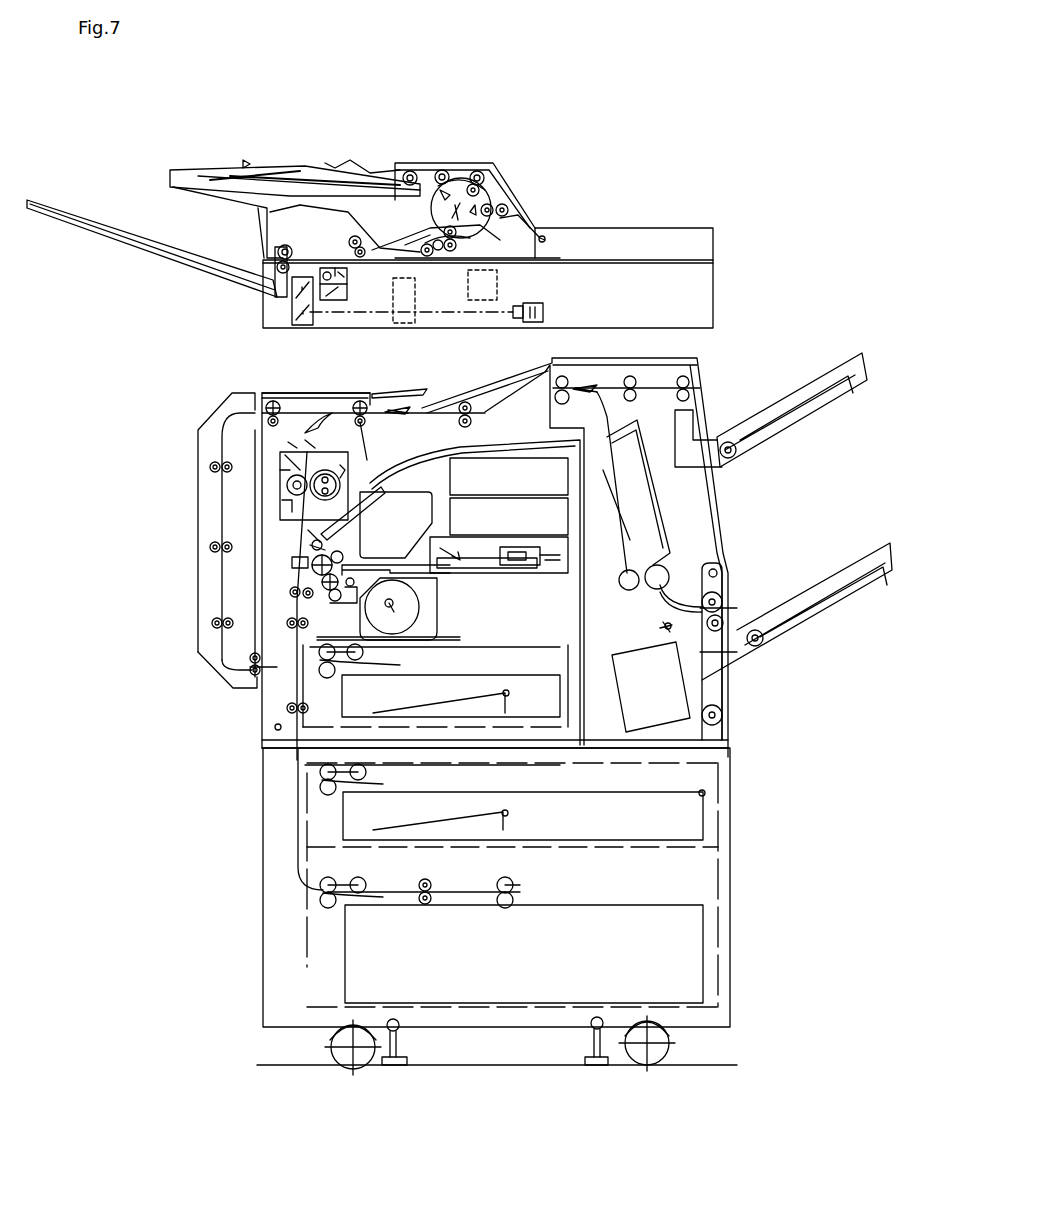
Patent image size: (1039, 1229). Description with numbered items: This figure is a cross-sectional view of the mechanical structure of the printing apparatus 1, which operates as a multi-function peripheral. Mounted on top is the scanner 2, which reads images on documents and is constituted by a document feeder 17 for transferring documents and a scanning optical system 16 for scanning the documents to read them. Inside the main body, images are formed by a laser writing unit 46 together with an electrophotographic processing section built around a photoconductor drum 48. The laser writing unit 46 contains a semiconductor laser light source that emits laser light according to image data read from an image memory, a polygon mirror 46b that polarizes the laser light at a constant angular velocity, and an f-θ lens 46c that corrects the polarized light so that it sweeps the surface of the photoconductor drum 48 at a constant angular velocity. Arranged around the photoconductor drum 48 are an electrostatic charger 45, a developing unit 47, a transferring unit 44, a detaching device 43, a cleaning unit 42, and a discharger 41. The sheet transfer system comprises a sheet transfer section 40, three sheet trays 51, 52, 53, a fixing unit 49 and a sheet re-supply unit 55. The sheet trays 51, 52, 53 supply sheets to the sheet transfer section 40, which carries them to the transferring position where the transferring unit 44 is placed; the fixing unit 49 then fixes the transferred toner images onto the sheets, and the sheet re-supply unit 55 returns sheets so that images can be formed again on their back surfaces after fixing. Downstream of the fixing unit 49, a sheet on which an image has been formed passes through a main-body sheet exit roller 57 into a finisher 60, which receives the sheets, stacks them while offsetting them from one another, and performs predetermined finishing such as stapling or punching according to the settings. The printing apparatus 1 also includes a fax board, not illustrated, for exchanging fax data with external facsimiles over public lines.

The printing apparatus 1 is at (459, 587).
The scanner 2 is at (406, 233).
The scanning optical system 16 is at (708, 283).
The document feeder 17 is at (510, 172).
The sheet transfer section 40 is at (299, 543).
The discharger 41 is at (350, 537).
The cleaning unit 42 is at (310, 538).
The detaching device 43 is at (312, 546).
The transferring unit 44 is at (318, 554).
The electrostatic charger 45 is at (360, 550).
The laser writing unit 46 is at (499, 538).
The polygon mirror 46b is at (520, 534).
The f-θ lens 46c is at (432, 596).
The developing unit 47 is at (371, 593).
The photoconductor drum 48 is at (312, 578).
The fixing unit 49 is at (347, 460).
The sheet tray 51 is at (455, 676).
The sheet tray 52 is at (532, 805).
The sheet tray 53 is at (588, 913).
The sheet re-supply unit 55 is at (208, 418).
The main-body sheet exit roller 57 is at (348, 395).
The finisher 60 is at (700, 368).